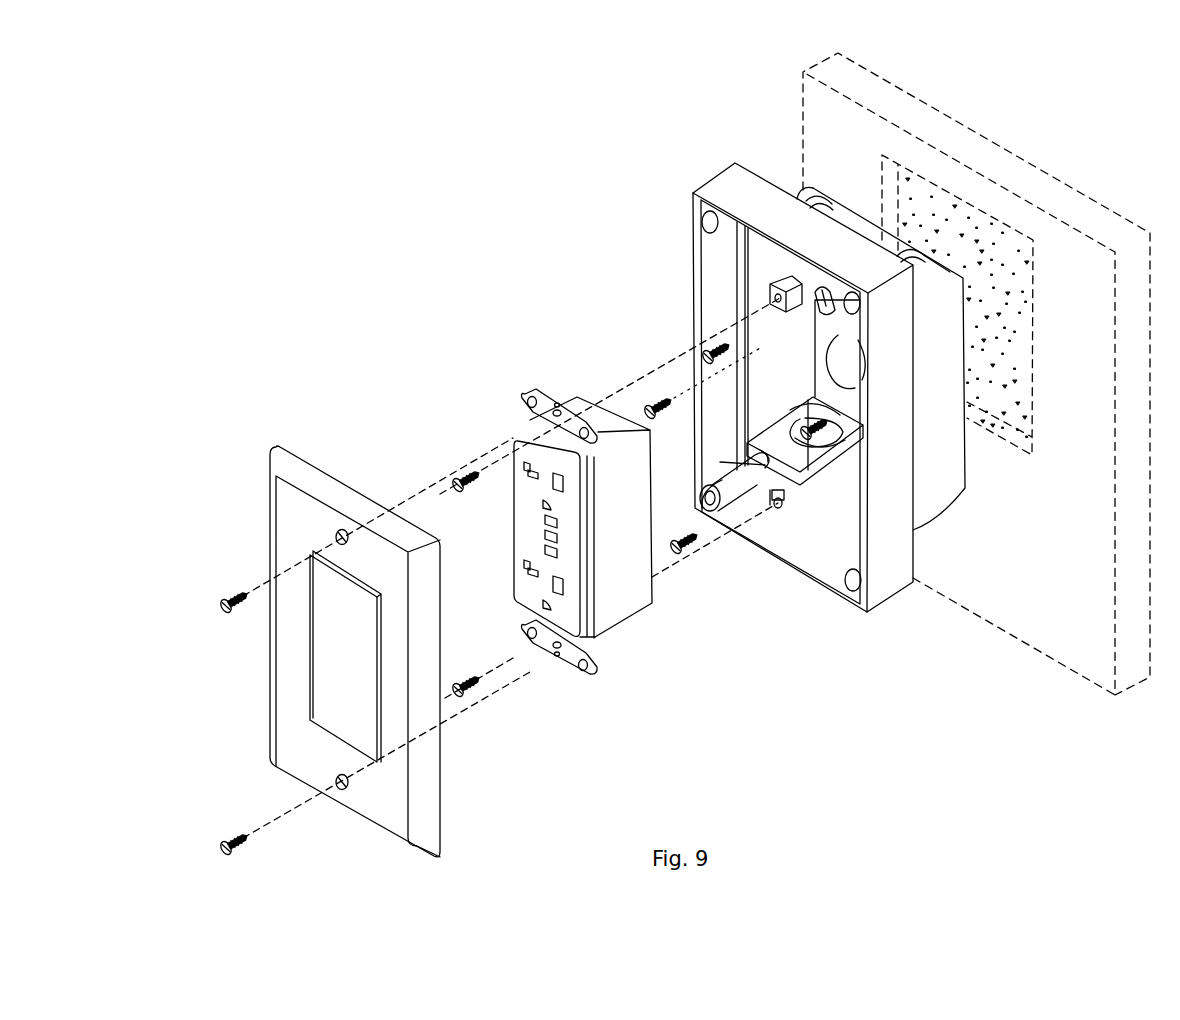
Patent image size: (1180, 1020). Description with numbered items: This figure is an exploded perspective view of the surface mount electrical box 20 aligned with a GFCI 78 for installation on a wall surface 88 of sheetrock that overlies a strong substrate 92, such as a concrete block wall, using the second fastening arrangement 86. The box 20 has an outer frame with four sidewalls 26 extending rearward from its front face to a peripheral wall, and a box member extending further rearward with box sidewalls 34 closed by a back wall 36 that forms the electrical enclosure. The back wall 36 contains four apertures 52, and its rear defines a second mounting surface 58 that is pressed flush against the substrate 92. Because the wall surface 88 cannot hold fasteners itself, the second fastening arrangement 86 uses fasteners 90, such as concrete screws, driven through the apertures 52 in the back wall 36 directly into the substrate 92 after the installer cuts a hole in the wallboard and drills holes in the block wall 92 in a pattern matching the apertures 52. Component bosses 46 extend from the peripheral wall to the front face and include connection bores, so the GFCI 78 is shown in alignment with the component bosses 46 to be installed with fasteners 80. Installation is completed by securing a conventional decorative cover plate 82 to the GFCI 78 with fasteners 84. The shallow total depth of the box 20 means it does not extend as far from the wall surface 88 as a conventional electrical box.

The surface mount electrical box 20 is at (826, 376).
The sidewalls 26 is at (803, 387).
The box sidewalls 34 is at (881, 358).
The back wall 36 is at (850, 332).
The component bosses 46 is at (800, 314).
The apertures 52 is at (830, 297).
The second mounting surface 58 is at (972, 364).
The GFCI 78 is at (600, 503).
The fasteners 80 is at (472, 494).
The decorative cover plate 82 is at (306, 456).
The fasteners 84 is at (236, 614).
The second fastening arrangement 86 is at (630, 397).
The wall surface 88 is at (976, 374).
The fasteners 90 is at (654, 404).
The substrate 92 is at (957, 305).